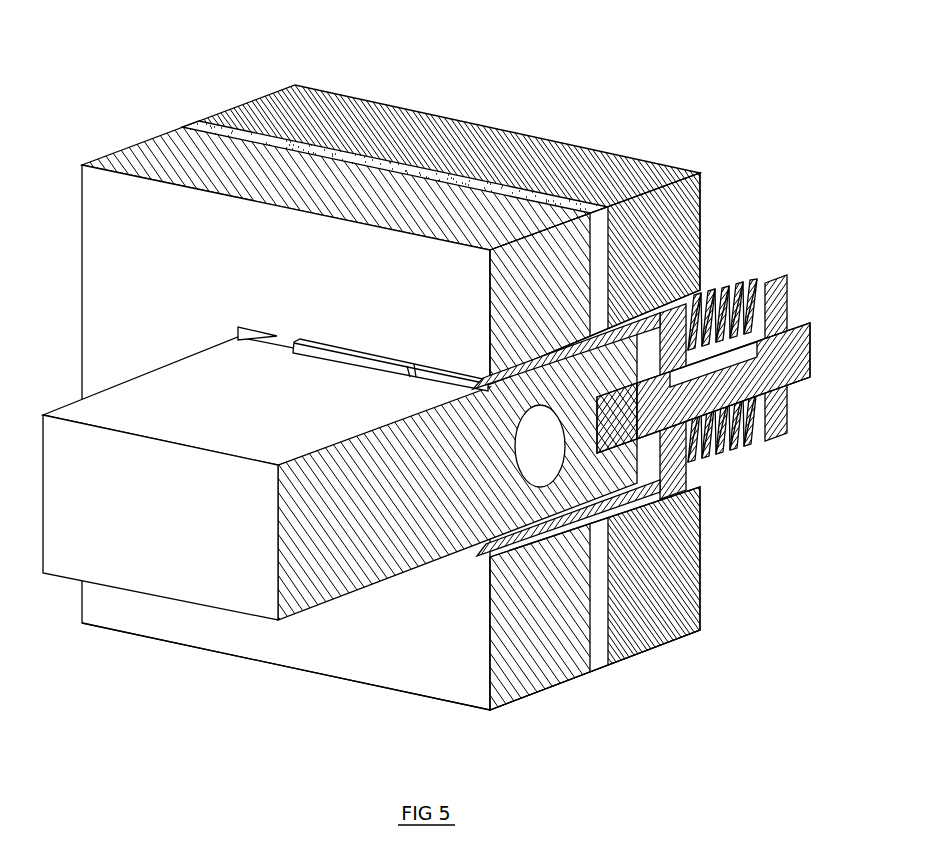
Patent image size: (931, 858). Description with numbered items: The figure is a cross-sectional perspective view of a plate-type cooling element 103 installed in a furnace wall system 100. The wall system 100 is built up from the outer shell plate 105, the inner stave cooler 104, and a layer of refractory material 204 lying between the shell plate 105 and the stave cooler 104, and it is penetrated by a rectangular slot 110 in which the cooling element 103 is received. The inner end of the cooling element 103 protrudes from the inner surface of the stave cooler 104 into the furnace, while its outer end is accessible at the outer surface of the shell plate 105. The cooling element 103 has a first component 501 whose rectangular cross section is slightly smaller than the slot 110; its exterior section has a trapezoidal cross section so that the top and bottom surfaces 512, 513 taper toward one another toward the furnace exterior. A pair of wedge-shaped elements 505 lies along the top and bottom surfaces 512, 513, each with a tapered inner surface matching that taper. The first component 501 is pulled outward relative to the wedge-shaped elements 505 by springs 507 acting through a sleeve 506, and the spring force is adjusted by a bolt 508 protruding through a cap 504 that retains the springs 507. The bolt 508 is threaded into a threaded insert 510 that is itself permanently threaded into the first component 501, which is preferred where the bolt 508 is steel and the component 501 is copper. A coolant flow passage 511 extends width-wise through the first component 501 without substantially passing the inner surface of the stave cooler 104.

The furnace wall system 100 is at (151, 108).
The plate-type cooling element 103 is at (76, 401).
The inner stave cooler 104 is at (283, 647).
The outer shell plate 105 is at (640, 638).
The rectangular slot 110 is at (270, 342).
The layer of refractory material 204 is at (597, 663).
The first component 501 is at (197, 570).
The cap 504 is at (775, 403).
The wedge-shaped elements 505 is at (550, 358).
The sleeve 506 is at (678, 466).
The springs 507 is at (723, 452).
The bolt 508 is at (798, 322).
The threaded insert 510 is at (633, 413).
The coolant flow passage 511 is at (526, 456).
The top surface 512 is at (494, 390).
The bottom surface 513 is at (481, 550).